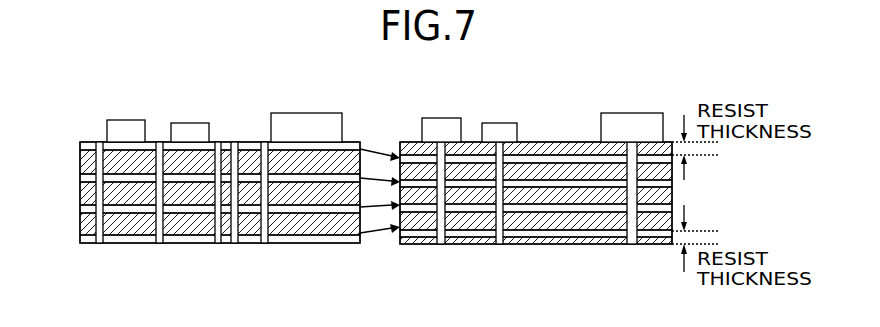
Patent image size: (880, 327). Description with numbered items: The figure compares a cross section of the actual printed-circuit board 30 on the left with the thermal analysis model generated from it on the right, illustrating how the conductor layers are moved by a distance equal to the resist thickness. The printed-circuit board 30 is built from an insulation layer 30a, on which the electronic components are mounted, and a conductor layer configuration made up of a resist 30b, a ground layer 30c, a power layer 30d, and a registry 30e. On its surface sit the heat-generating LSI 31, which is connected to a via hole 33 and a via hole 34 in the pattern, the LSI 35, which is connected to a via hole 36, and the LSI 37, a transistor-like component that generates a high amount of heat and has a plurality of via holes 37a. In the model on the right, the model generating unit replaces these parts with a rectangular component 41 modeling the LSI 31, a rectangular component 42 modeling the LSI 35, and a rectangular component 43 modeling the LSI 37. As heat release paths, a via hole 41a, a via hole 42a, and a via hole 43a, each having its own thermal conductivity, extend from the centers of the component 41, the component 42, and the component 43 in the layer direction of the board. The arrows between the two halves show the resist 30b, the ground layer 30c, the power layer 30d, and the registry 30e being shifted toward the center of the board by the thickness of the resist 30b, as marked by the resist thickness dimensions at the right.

The printed-circuit board 30 is at (77, 133).
The insulation layer 30a is at (312, 165).
The resist 30b is at (80, 146).
The ground layer 30c is at (80, 178).
The power layer 30d is at (80, 209).
The registry 30e is at (80, 239).
The LSI 31 is at (127, 120).
The via hole 33 is at (99, 243).
The via hole 34 is at (159, 243).
The LSI 35 is at (305, 113).
The via hole 36 is at (264, 243).
The LSI 37 is at (190, 123).
The via holes 37a is at (234, 243).
The component 41 is at (441, 118).
The via hole 41a is at (441, 244).
The component 42 is at (634, 113).
The via hole 42a is at (631, 244).
The component 43 is at (500, 123).
The via hole 43a is at (500, 244).